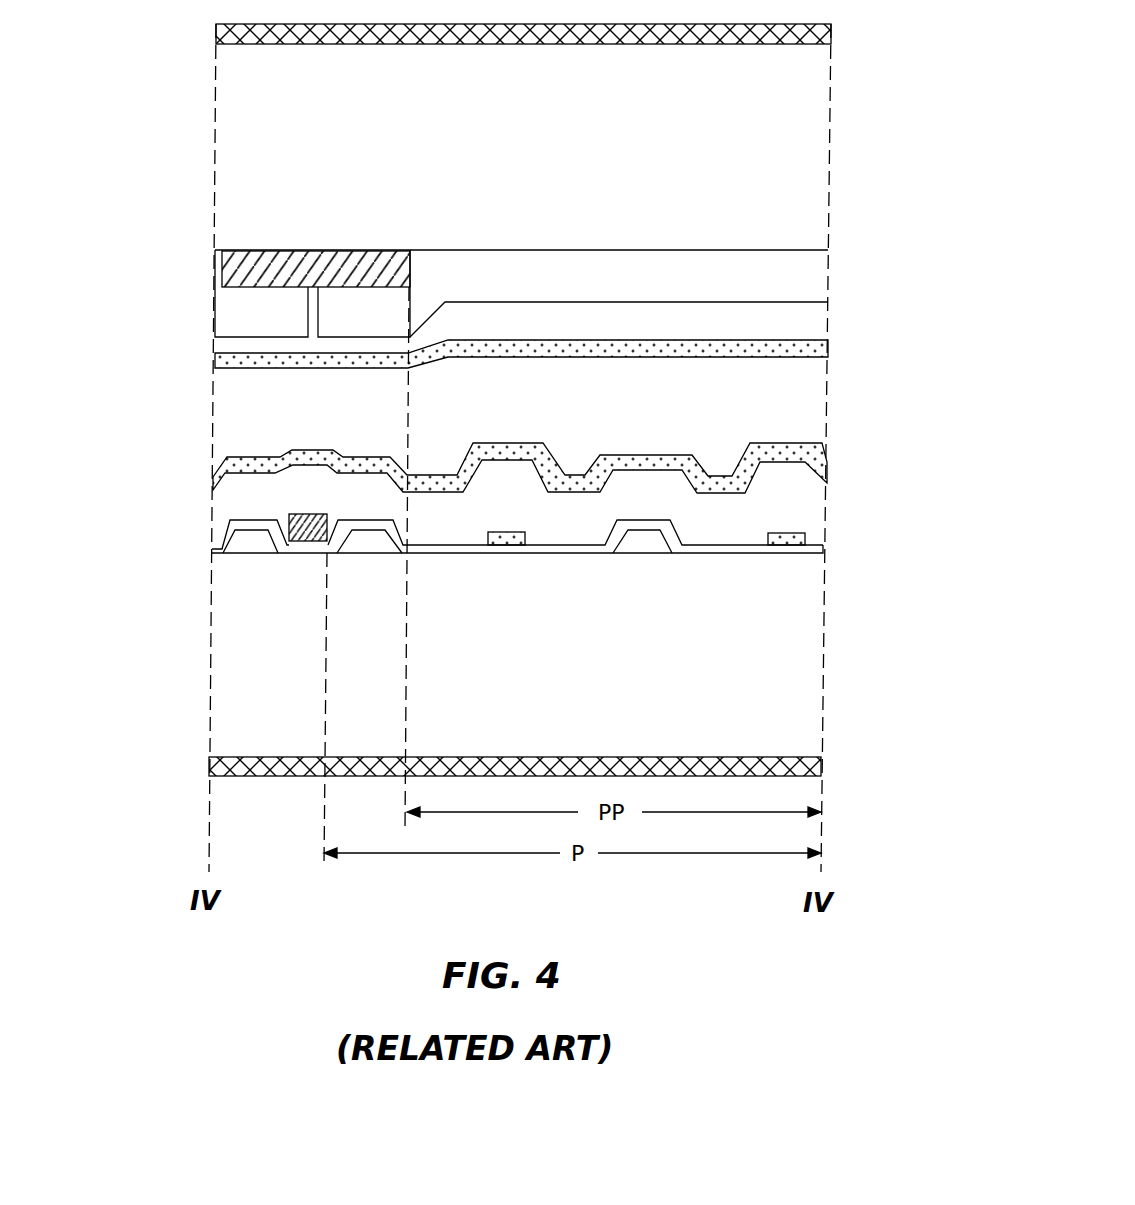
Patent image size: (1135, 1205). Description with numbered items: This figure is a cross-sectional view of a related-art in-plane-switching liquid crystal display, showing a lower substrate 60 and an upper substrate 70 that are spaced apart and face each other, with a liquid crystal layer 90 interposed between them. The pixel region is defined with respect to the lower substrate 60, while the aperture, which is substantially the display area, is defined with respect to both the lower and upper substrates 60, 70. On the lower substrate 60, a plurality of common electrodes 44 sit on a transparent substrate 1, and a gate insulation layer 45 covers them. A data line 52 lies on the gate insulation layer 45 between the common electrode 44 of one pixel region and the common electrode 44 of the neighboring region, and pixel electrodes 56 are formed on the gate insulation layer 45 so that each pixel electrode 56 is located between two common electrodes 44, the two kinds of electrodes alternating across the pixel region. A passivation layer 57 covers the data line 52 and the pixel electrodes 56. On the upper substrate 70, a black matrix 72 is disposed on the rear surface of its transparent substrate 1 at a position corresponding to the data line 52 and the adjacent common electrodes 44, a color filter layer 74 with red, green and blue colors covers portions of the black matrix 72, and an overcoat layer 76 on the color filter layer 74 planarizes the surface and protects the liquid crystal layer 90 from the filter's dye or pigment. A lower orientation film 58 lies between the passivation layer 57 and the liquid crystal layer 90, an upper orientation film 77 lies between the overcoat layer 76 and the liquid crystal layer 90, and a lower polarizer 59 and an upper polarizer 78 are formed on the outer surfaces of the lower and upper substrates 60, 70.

The transparent substrate 1 is at (512, 160).
The common electrode 44 is at (250, 543).
The gate insulation layer 45 is at (823, 555).
The data line 52 is at (310, 537).
The pixel electrode 56 is at (505, 545).
The passivation layer 57 is at (812, 510).
The lower orientation film 58 is at (827, 470).
The lower polarizer 59 is at (822, 770).
The lower substrate 60 is at (211, 475).
The upper substrate 70 is at (215, 25).
The black matrix 72 is at (340, 268).
The color filter layer 74 is at (812, 280).
The overcoat layer 76 is at (812, 330).
The upper orientation film 77 is at (812, 365).
The upper polarizer 78 is at (831, 41).
The liquid crystal layer 90 is at (213, 368).